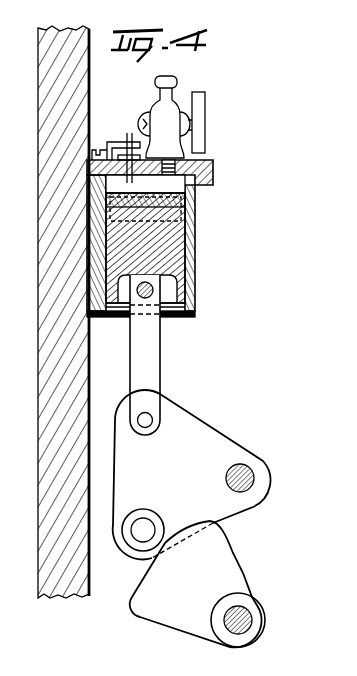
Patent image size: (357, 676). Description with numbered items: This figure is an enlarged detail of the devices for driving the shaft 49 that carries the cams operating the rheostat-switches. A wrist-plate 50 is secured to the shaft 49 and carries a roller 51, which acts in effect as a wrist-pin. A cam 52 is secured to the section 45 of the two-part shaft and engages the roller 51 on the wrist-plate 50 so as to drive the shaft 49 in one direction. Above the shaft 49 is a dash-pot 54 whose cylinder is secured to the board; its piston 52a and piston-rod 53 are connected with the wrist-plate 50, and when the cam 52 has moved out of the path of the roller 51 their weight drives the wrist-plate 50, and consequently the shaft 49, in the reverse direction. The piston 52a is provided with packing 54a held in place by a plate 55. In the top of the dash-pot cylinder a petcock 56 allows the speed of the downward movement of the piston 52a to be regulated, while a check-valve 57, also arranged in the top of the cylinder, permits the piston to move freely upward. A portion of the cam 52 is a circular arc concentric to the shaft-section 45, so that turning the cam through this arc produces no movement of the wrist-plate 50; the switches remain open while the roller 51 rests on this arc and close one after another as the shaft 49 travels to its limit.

The shaft-section 45 is at (253, 617).
The shaft 49 is at (255, 484).
The wrist-plate 50 is at (192, 475).
The roller 51 is at (152, 523).
The cam 52 is at (196, 584).
The piston 52a is at (162, 248).
The piston-rod 53 is at (158, 353).
The dash-pot 54 is at (153, 238).
The packing 54a is at (177, 215).
The plate 55 is at (175, 188).
The petcock 56 is at (158, 98).
The check-valve 57 is at (126, 142).